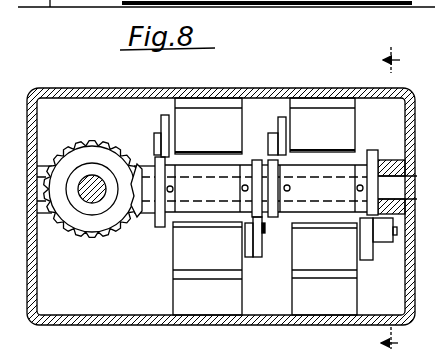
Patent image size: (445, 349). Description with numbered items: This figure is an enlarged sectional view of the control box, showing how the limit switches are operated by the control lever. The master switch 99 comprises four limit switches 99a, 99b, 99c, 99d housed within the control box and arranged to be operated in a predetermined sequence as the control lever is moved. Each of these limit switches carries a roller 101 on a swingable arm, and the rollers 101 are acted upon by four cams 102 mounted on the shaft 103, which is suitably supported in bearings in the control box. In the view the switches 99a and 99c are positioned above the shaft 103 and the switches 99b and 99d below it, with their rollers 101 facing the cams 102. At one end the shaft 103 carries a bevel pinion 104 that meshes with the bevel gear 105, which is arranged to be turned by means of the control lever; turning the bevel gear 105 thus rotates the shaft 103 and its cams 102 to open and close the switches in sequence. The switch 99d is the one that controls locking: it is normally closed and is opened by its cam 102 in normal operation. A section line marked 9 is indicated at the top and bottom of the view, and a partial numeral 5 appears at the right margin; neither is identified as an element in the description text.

The master switch 99 is at (282, 85).
The limit switch 99a is at (225, 113).
The limit switch 99b is at (199, 268).
The limit switch 99c is at (323, 117).
The limit switch 99d is at (325, 268).
The roller 101 is at (154, 140).
The cam 102 is at (174, 190).
The shaft 103 is at (404, 184).
The bevel pinion 104 is at (136, 218).
The bevel gear 105 is at (82, 143).
The frame 5 is at (441, 197).
The section line 9 is at (392, 197).